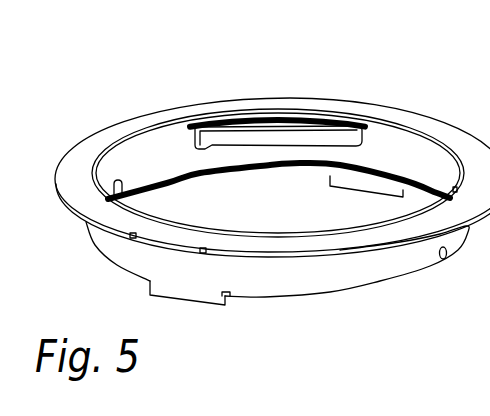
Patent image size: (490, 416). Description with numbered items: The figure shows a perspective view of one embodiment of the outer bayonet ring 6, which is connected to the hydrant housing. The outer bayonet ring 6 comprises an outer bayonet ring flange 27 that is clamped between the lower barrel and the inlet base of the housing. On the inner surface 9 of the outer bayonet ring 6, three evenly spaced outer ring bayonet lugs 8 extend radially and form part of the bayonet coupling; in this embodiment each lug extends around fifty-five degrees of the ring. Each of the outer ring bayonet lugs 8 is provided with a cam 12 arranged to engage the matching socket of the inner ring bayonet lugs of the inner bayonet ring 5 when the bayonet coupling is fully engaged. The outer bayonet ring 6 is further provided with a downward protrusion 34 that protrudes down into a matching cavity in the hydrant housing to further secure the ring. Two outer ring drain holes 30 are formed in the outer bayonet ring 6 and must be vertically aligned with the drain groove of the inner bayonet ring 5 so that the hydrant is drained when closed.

The inner bayonet ring 5 is at (259, 190).
The outer bayonet ring 6 is at (259, 145).
The outer bayonet ring flange 27 is at (93, 145).
The outer ring bayonet lug 8 is at (264, 133).
The inner surface 9 is at (386, 153).
The cam 12 is at (208, 130).
The outer ring drain hole 30 is at (446, 258).
The downward protrusion 34 is at (192, 297).